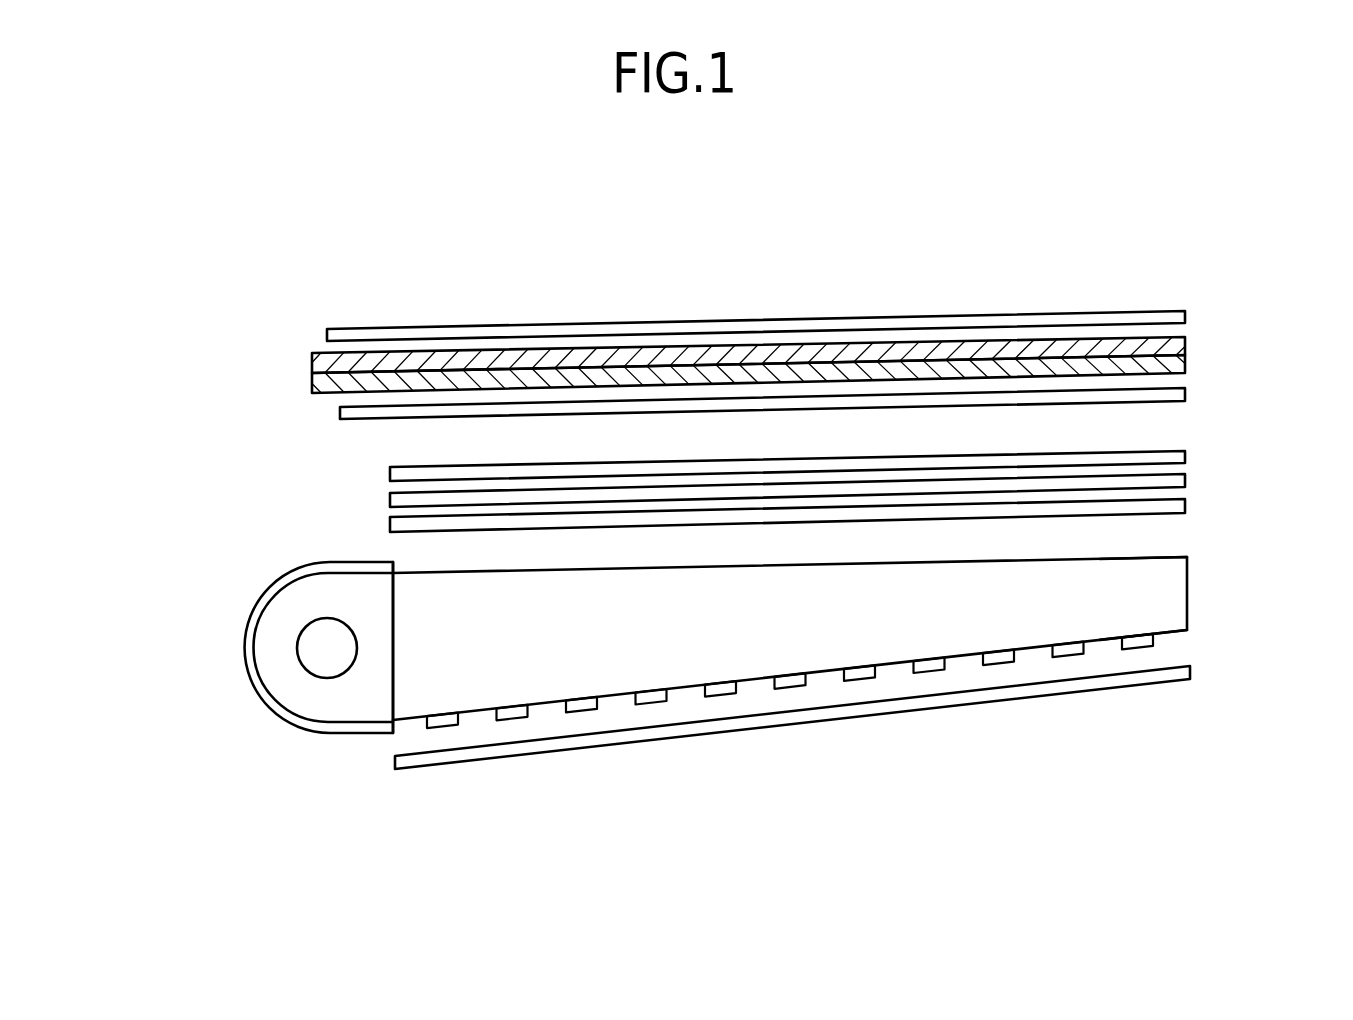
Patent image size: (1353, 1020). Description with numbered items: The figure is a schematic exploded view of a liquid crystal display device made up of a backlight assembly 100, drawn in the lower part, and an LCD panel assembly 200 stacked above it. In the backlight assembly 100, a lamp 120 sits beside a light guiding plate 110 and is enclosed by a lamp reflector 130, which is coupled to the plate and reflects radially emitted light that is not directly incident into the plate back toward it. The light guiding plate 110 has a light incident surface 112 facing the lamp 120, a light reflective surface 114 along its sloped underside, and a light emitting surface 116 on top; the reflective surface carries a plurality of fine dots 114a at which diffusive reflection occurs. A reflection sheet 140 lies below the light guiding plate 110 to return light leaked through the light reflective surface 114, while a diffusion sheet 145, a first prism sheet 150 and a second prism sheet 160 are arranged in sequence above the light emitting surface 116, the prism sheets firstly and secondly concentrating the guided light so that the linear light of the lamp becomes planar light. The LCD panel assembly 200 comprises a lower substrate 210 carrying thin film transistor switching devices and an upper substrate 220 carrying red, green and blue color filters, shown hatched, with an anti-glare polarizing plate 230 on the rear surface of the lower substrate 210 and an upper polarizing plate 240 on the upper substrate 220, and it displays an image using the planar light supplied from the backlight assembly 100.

The backlight assembly 100 is at (115, 457).
The light guiding plate 110 is at (403, 689).
The light incident surface 112 is at (393, 620).
The light reflective surface 114 is at (1173, 633).
The fine dots 114a is at (1140, 650).
The light emitting surface 116 is at (1163, 556).
The lamp 120 is at (313, 649).
The lamp reflector 130 is at (255, 606).
The reflection sheet 140 is at (395, 760).
The diffusion sheet 145 is at (390, 520).
The first prism sheet 150 is at (390, 495).
The second prism sheet 160 is at (390, 470).
The LCD panel assembly 200 is at (200, 288).
The lower substrate 210 is at (312, 385).
The upper substrate 220 is at (312, 360).
The anti-glare polarizing plate 230 is at (340, 410).
The upper polarizing plate 240 is at (327, 333).